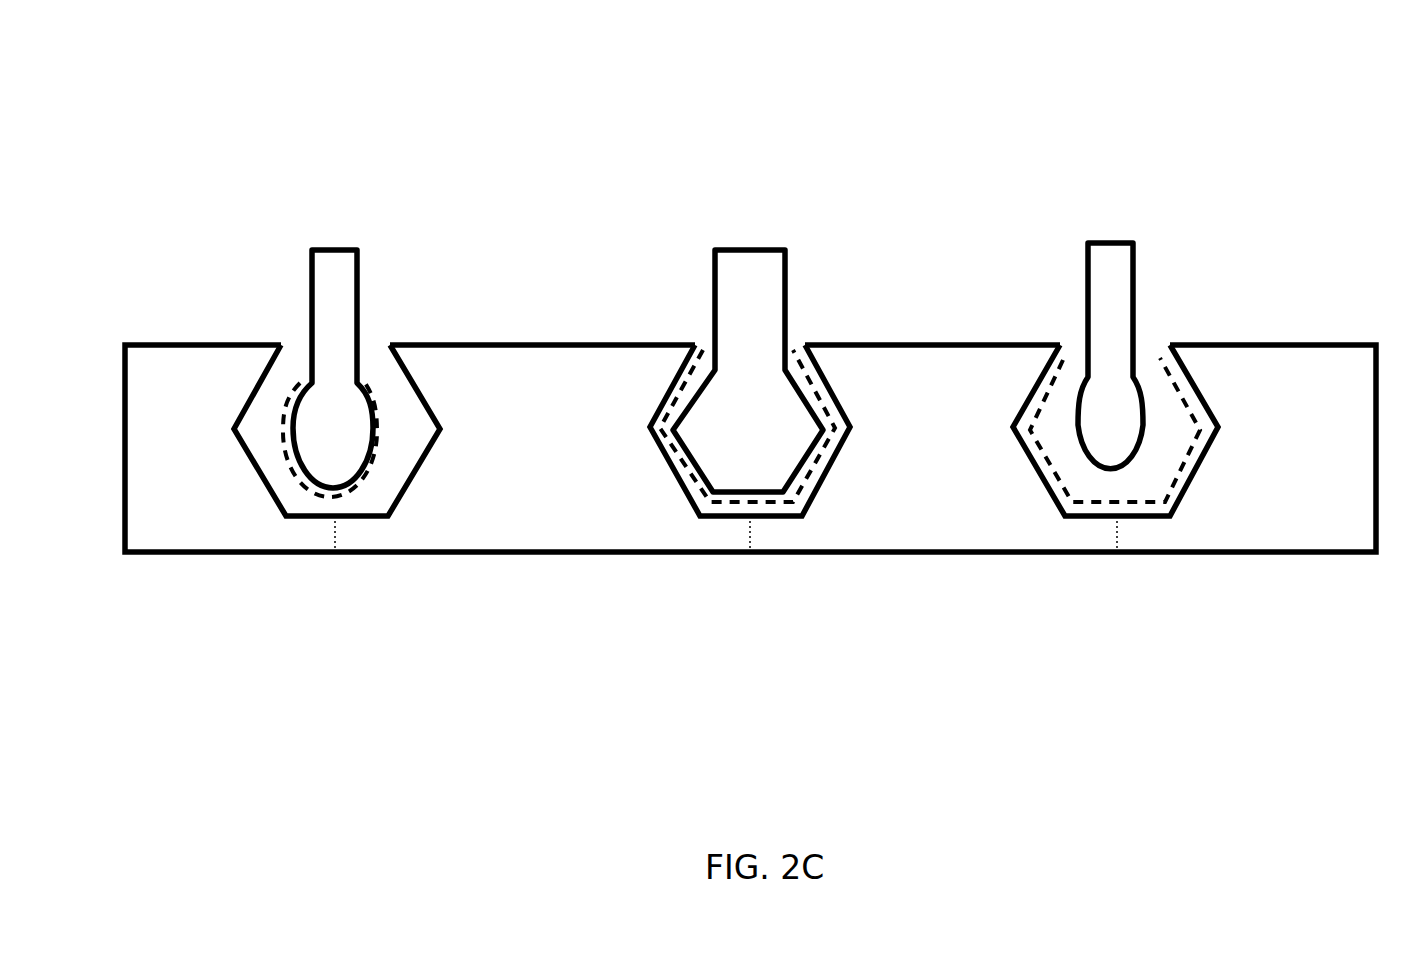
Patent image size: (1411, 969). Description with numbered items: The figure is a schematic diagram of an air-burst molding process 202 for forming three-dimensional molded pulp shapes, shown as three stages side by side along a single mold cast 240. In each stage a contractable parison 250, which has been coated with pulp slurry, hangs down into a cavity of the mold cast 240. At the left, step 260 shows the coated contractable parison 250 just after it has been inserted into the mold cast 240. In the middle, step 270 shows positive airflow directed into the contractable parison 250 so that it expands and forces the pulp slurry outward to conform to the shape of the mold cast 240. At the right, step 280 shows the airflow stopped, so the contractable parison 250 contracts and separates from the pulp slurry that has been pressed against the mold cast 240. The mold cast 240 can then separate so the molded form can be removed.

The air-burst molding process 202 is at (1176, 131).
The mold cast 240 is at (181, 535).
The contractable parison 250 is at (343, 316).
The step 260 is at (279, 279).
The step 270 is at (687, 281).
The step 280 is at (1056, 281).